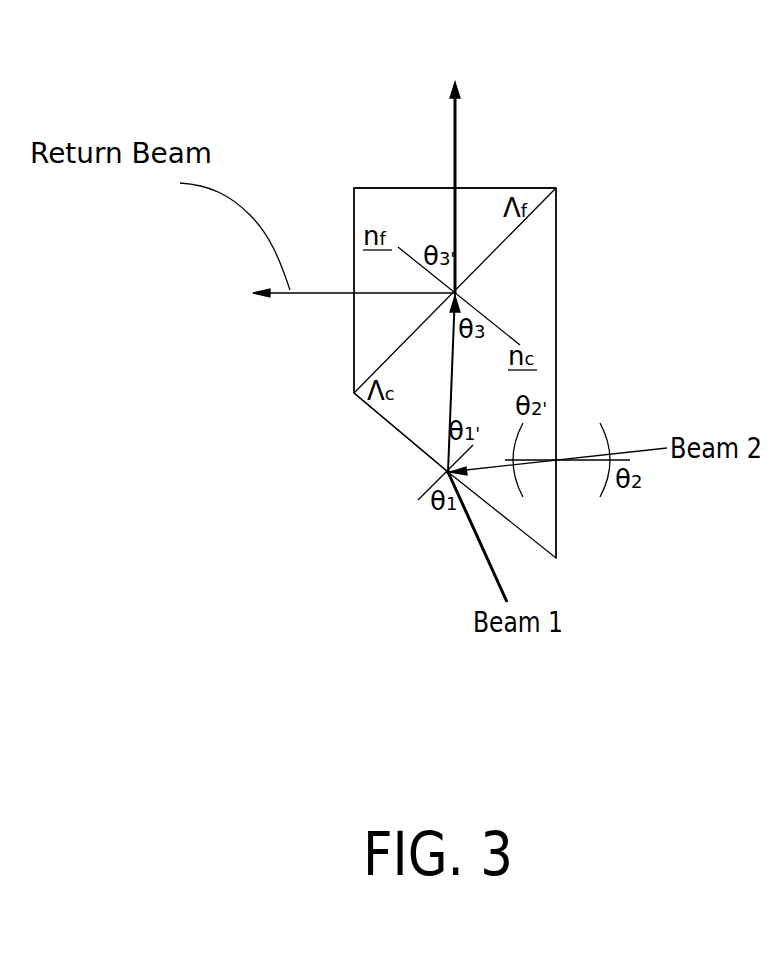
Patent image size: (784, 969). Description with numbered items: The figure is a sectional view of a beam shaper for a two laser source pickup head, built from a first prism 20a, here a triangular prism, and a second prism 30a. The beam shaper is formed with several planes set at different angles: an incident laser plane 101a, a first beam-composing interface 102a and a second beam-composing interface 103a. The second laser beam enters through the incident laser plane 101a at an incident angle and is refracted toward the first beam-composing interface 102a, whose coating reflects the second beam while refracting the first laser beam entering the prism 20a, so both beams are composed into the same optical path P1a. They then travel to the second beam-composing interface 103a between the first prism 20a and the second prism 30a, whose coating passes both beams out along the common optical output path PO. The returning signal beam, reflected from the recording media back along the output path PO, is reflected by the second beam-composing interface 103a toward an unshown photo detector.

The first prism 20a is at (530, 322).
The second prism 30a is at (353, 187).
The second beam-composing interface 103a is at (380, 360).
The first beam-composing interface 102a is at (413, 455).
The incident laser plane 101a is at (556, 535).
The optical path P1a is at (448, 402).
The optical output path PO is at (457, 118).